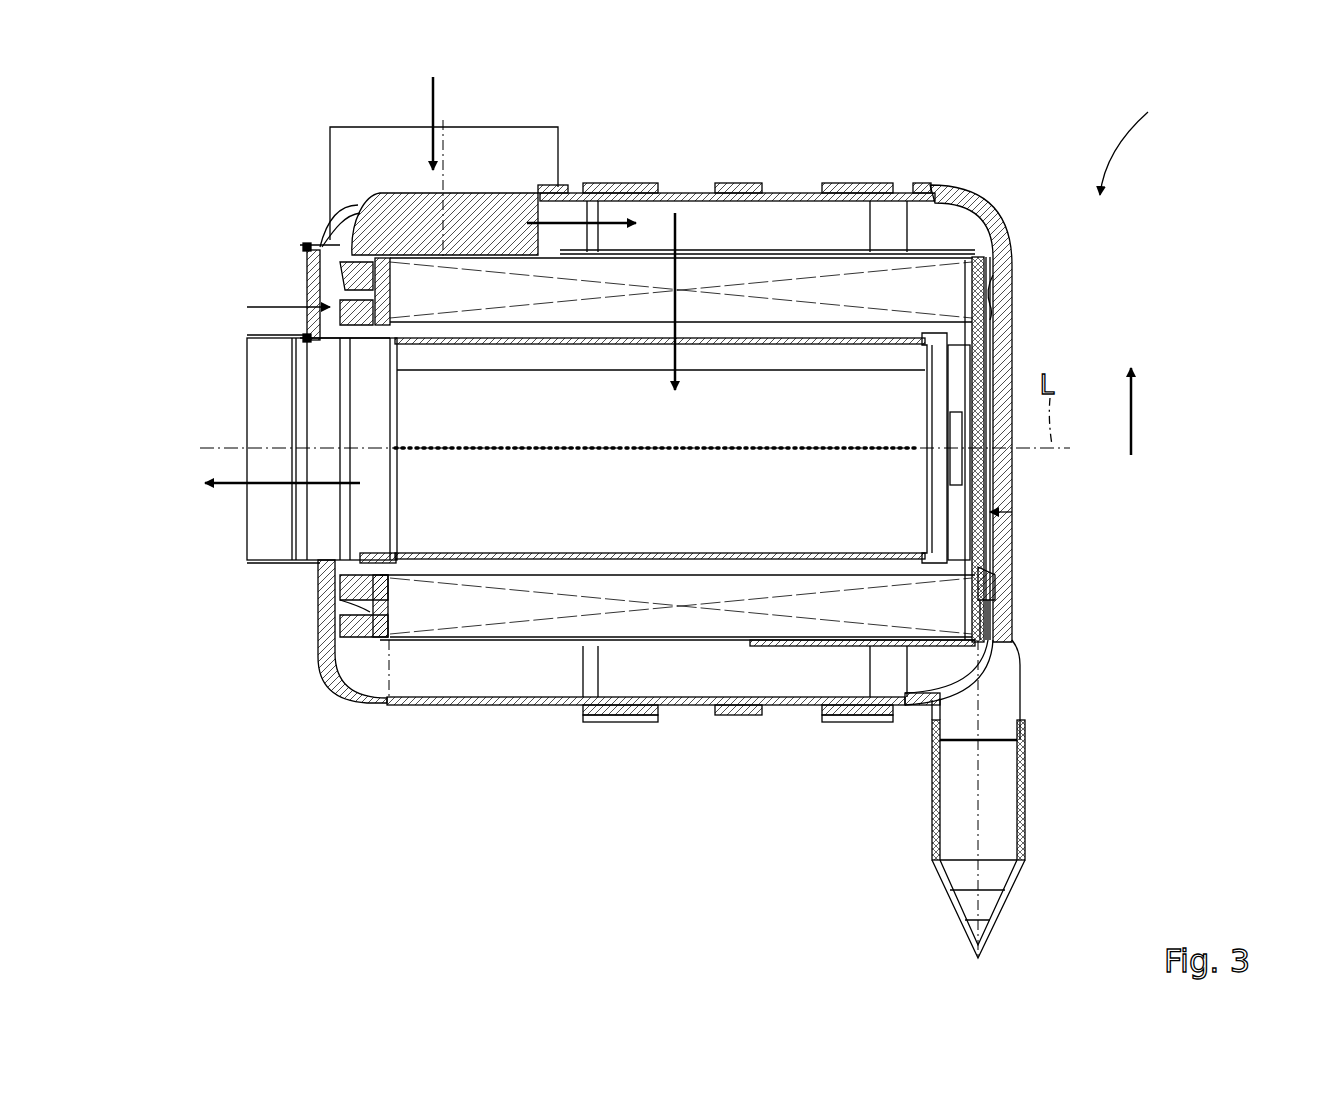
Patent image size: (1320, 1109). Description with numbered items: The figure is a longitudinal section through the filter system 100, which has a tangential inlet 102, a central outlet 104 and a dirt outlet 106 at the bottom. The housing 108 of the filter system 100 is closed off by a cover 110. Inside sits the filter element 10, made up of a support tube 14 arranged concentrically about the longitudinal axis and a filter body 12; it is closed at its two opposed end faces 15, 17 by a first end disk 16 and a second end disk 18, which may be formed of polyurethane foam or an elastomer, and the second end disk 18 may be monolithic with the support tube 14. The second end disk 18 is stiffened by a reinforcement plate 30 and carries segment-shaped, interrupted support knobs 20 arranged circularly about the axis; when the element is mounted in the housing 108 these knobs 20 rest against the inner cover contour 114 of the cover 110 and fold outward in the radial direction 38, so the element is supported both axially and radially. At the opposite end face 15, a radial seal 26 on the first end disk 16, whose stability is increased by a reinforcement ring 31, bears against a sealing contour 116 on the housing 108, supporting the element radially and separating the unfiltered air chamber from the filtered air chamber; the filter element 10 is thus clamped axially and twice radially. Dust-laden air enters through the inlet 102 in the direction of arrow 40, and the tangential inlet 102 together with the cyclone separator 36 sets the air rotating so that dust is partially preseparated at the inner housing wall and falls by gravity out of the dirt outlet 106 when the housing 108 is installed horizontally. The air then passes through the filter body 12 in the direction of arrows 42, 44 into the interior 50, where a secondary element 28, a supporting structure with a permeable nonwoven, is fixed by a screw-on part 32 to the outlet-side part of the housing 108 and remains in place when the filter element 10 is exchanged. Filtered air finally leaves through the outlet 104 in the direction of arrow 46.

The filter element 10 is at (652, 645).
The filter body 12 is at (553, 623).
The support tube 14 is at (712, 575).
The end face 15 is at (318, 574).
The first end disk 16 is at (270, 302).
The end face 17 is at (988, 617).
The second end disk 18 is at (1012, 512).
The support knobs 20 is at (987, 307).
The radial seal 26 is at (332, 618).
The secondary element 28 is at (800, 555).
The reinforcement plate 30 is at (978, 588).
The reinforcement ring 31 is at (373, 273).
The screw-on part 32 is at (367, 552).
The cyclone separator 36 is at (413, 257).
The radial direction 38 is at (1133, 410).
The arrow 40 is at (430, 95).
The arrow 42 is at (615, 225).
The arrow 44 is at (675, 232).
The arrow 46 is at (230, 483).
The interior 50 is at (581, 507).
The filter system 100 is at (1141, 139).
The inlet 102 is at (482, 145).
The outlet 104 is at (262, 398).
The dirt outlet 106 is at (1003, 797).
The housing 108 is at (383, 710).
The cover 110 is at (990, 192).
The inner cover contour 114 is at (990, 283).
The sealing contour 116 is at (367, 594).